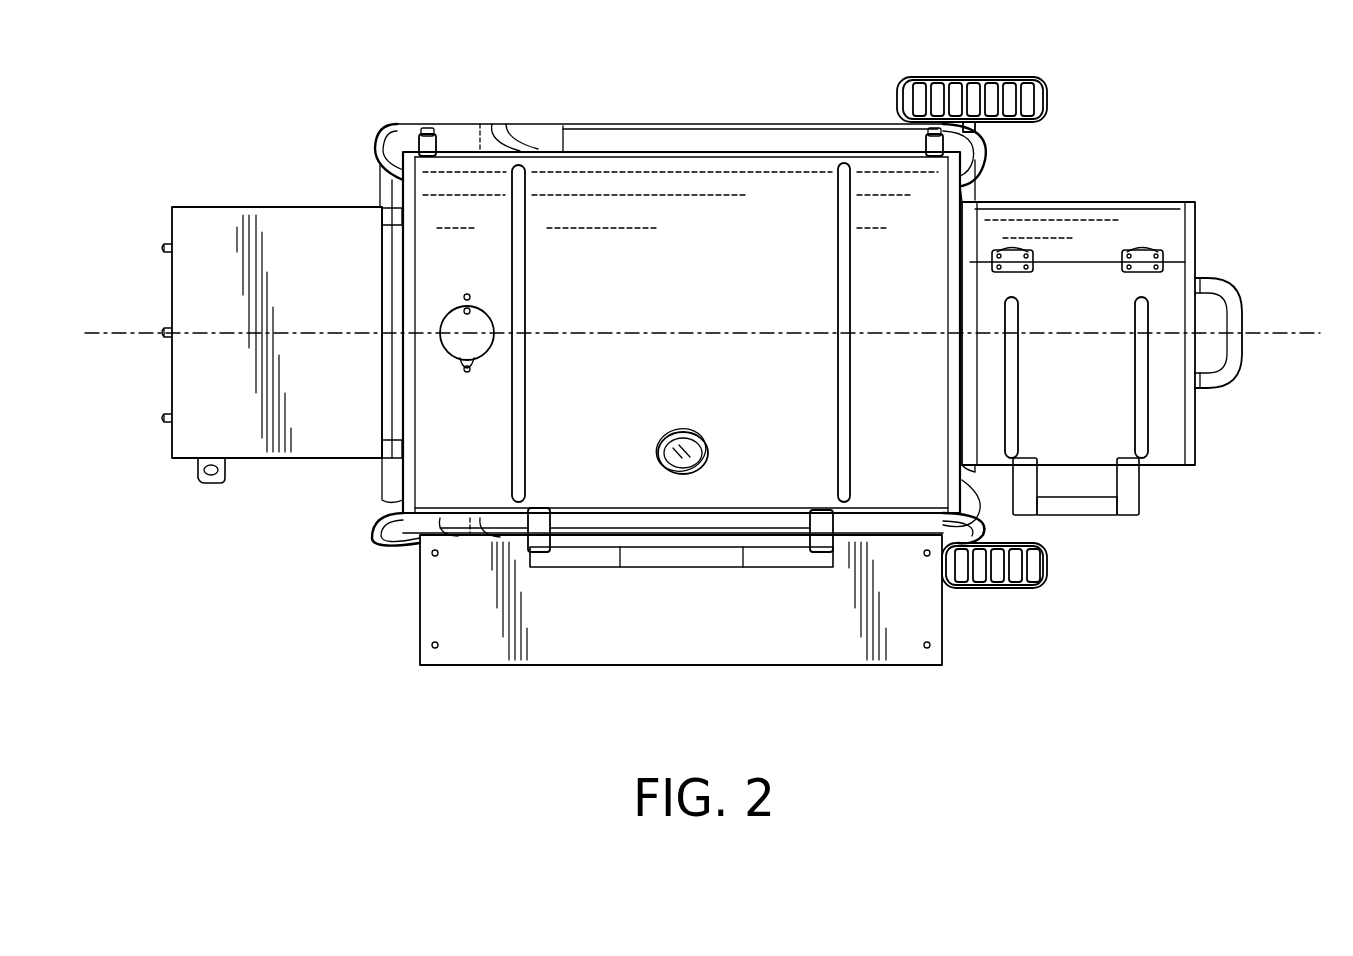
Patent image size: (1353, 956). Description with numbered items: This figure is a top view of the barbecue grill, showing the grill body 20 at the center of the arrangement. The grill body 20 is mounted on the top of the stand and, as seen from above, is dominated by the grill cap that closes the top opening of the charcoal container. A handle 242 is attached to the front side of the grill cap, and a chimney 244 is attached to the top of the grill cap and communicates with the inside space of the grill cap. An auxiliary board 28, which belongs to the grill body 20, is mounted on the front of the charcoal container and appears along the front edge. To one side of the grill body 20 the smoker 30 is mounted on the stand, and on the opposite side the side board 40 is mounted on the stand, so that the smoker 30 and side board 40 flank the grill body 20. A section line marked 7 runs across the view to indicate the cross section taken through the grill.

The grill body 20 is at (748, 142).
The auxiliary board 28 is at (400, 616).
The smoker 30 is at (1114, 192).
The side board 40 is at (226, 194).
The handle 242 is at (673, 557).
The chimney 244 is at (478, 342).
The section line 7- 7 is at (102, 365).